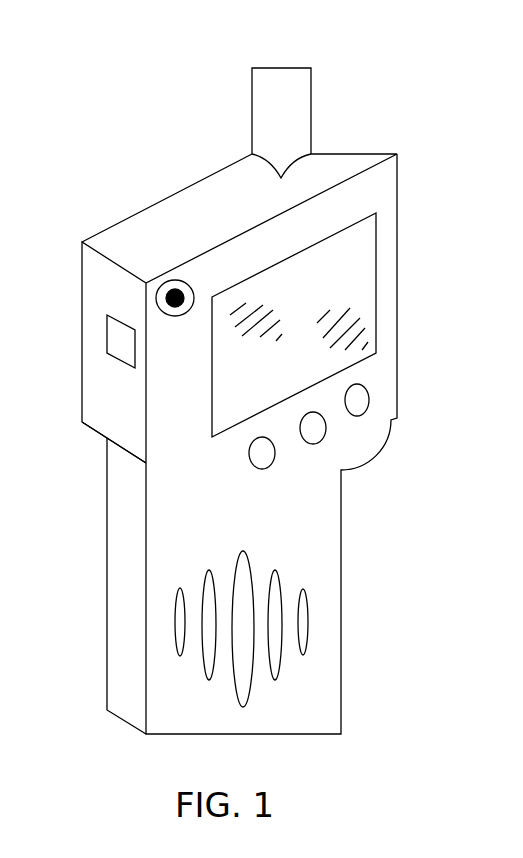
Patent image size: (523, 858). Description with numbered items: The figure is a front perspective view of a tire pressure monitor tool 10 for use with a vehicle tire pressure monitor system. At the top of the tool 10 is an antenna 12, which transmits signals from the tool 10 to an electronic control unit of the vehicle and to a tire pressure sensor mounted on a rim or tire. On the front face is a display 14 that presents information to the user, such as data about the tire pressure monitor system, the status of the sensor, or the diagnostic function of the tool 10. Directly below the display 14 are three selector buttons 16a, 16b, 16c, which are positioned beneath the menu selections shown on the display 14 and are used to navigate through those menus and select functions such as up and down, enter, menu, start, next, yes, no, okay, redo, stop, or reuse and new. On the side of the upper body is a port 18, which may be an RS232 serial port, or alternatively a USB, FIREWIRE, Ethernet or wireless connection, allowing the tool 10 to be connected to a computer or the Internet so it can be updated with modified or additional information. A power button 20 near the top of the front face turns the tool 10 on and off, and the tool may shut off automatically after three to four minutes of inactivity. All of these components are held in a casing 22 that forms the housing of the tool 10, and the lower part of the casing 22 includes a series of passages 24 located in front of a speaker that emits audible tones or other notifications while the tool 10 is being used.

The tire pressure monitor tool 10 is at (133, 172).
The antenna 12 is at (285, 68).
The display 14 is at (359, 268).
The selector button 16a is at (273, 462).
The selector button 16b is at (325, 440).
The selector button 16c is at (370, 396).
The port 18 is at (117, 340).
The power button 20 is at (160, 298).
The casing 22 is at (305, 552).
The passages 24 is at (283, 626).